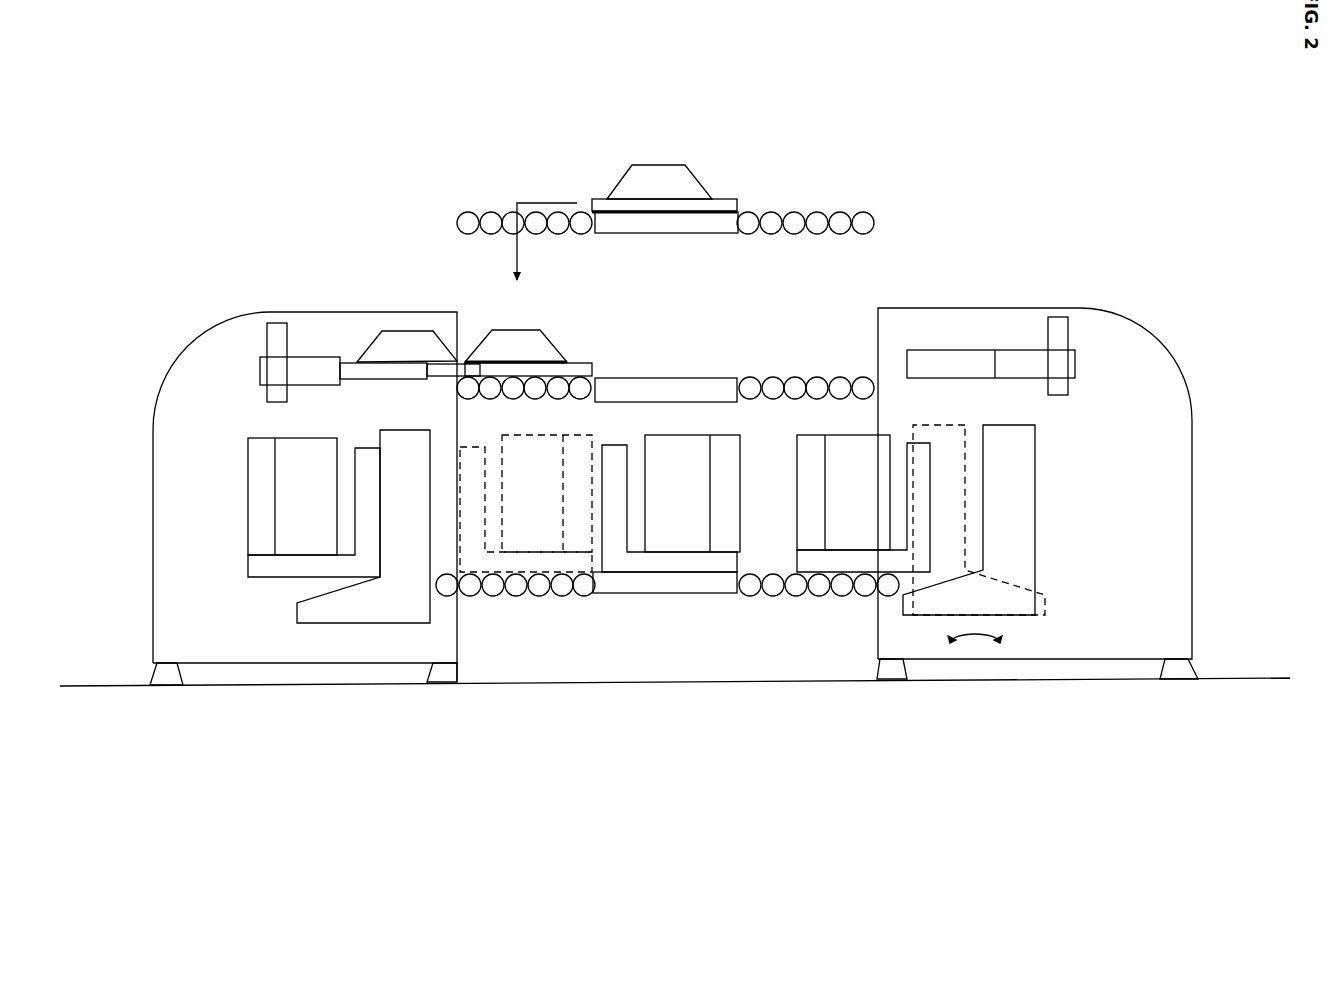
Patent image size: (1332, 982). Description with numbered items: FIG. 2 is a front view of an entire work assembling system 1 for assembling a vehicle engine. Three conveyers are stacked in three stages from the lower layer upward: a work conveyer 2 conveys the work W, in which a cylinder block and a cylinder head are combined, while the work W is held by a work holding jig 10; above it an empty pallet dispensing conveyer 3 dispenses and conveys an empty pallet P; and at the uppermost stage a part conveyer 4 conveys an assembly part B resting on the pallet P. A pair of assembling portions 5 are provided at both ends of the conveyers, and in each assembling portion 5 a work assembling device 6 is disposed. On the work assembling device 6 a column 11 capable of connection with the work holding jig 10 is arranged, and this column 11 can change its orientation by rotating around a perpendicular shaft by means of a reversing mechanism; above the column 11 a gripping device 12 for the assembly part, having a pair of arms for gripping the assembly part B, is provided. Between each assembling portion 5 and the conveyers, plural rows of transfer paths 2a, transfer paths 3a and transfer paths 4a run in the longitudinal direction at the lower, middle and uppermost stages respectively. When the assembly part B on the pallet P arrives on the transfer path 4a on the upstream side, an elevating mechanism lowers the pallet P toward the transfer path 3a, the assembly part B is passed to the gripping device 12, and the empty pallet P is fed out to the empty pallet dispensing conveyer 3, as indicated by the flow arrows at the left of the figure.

The work assembling system 1 is at (993, 167).
The work conveyer 2 is at (675, 605).
The transfer paths 2a is at (515, 592).
The empty pallet dispensing conveyer 3 is at (713, 368).
The transfer paths 3a is at (795, 378).
The part conveyer 4 is at (690, 240).
The transfer paths 4a is at (470, 218).
The assembling portion 5 is at (197, 385).
The work assembling device 6 is at (309, 345).
The work holding jig 10 is at (270, 567).
The column 11 is at (370, 612).
The gripping device for assembly part 12 is at (327, 362).
The assembly part B is at (650, 178).
The pallet P is at (728, 203).
The work W is at (260, 482).